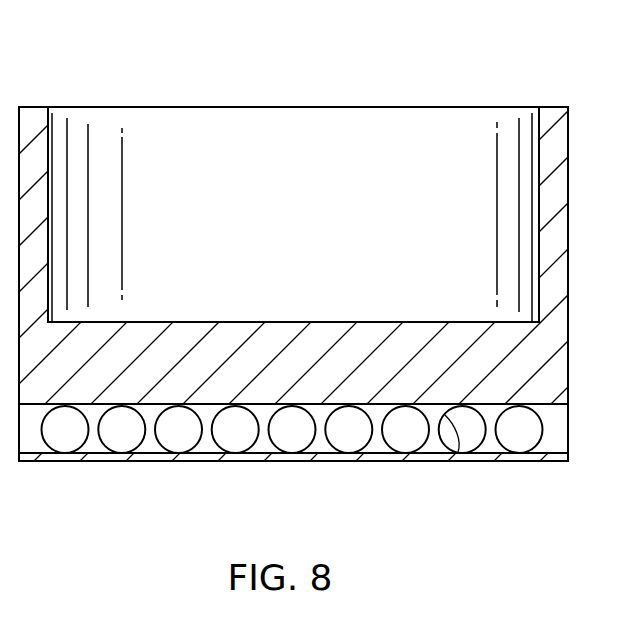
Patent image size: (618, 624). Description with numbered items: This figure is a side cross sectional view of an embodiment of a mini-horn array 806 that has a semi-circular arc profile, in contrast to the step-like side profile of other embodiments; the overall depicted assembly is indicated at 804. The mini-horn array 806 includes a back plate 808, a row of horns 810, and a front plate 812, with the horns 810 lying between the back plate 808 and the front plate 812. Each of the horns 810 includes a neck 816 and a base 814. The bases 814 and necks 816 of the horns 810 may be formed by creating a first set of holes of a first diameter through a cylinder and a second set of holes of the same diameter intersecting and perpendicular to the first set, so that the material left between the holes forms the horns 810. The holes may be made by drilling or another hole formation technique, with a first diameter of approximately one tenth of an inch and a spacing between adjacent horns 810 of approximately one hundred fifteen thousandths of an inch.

The heat sink assembly 804 is at (88, 60).
The mini-horn array 806 is at (344, 480).
The back plate 808 is at (238, 322).
The horns 810 is at (507, 428).
The front plate 812 is at (140, 462).
The base 814 is at (448, 410).
The neck 816 is at (440, 430).